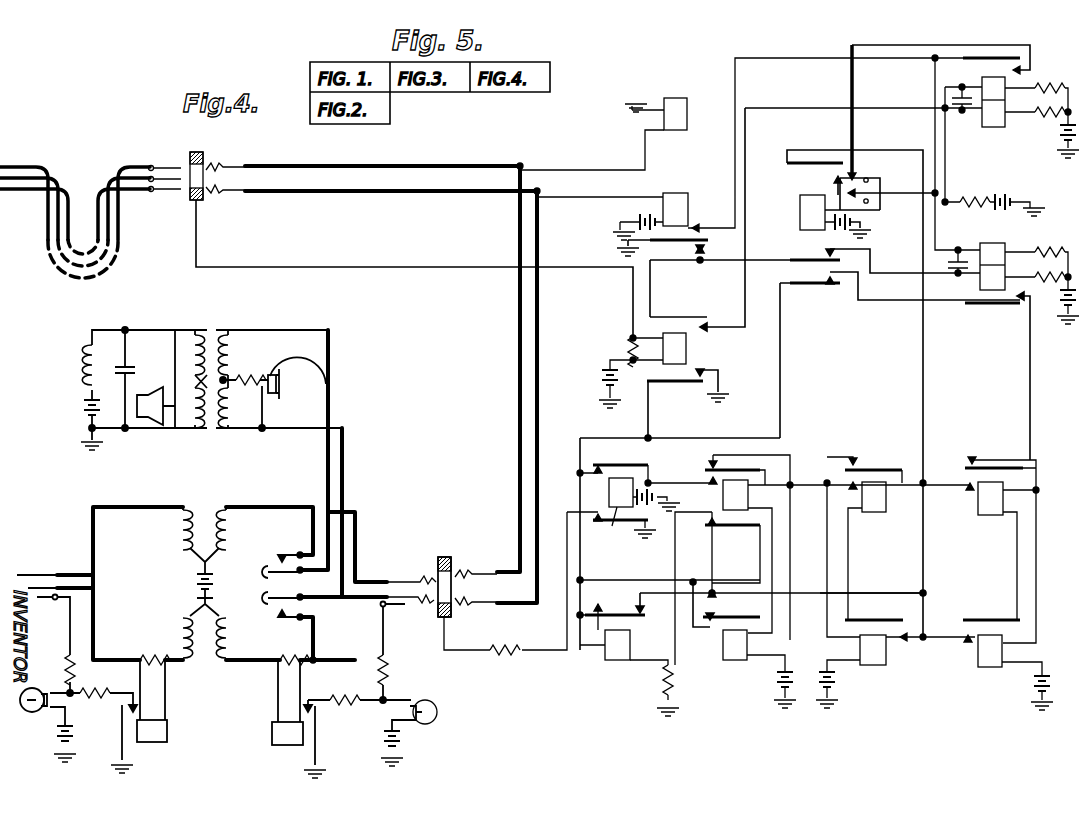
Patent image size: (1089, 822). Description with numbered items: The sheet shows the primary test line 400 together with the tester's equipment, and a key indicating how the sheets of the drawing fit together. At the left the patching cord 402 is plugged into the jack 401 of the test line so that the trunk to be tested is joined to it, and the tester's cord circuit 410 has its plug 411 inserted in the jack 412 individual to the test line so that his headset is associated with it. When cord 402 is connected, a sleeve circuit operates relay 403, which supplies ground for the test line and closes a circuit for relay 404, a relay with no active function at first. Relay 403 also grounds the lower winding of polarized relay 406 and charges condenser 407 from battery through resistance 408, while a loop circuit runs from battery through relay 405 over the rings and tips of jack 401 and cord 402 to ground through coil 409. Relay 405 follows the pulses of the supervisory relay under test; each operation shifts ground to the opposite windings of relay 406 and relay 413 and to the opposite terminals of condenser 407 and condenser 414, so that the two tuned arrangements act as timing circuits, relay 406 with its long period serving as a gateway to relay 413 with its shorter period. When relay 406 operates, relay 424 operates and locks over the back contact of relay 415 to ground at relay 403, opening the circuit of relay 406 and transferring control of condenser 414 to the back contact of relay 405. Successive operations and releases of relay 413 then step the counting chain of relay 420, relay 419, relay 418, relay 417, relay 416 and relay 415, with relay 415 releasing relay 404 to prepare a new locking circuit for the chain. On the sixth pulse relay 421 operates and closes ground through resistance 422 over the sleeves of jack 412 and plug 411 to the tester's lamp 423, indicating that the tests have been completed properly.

In FIG. 5, the central office equipment 400 is at (392, 363).
In FIG. 4, the jack 401 is at (208, 168).
In FIG. 4, the patching cord 402 is at (84, 240).
In FIG. 5, the relay 403 is at (686, 347).
In FIG. 5, the relay 404 is at (629, 660).
In FIG. 5, the relay 405 is at (673, 188).
In FIG. 5, the polarized relay 406 is at (1002, 127).
In FIG. 5, the condenser 407 is at (965, 110).
In FIG. 5, the resistance 408 is at (975, 192).
In FIG. 5, the coil 409 is at (677, 131).
In FIG. 4, the cord circuit 410 is at (219, 552).
In FIG. 4, the plug 411 is at (428, 588).
In FIG. 5, the jack 412 is at (457, 572).
In FIG. 5, the relay 413 is at (993, 238).
In FIG. 5, the condenser 414 is at (953, 256).
In FIG. 5, the relay 415 is at (723, 498).
In FIG. 5, the relay 416 is at (732, 660).
In FIG. 5, the relay 417 is at (874, 512).
In FIG. 5, the relay 418 is at (870, 665).
In FIG. 5, the relay 419 is at (982, 515).
In FIG. 5, the relay 420 is at (988, 667).
In FIG. 5, the relay 421 is at (642, 507).
In FIG. 5, the resistance 422 is at (502, 656).
In FIG. 4, the lamp 423 is at (426, 700).
In FIG. 5, the relay 424 is at (800, 214).